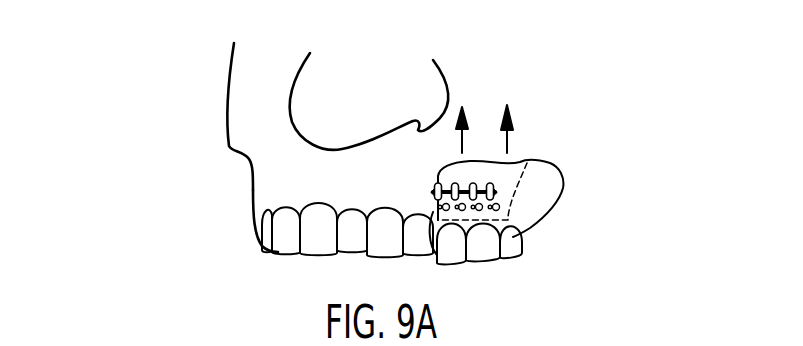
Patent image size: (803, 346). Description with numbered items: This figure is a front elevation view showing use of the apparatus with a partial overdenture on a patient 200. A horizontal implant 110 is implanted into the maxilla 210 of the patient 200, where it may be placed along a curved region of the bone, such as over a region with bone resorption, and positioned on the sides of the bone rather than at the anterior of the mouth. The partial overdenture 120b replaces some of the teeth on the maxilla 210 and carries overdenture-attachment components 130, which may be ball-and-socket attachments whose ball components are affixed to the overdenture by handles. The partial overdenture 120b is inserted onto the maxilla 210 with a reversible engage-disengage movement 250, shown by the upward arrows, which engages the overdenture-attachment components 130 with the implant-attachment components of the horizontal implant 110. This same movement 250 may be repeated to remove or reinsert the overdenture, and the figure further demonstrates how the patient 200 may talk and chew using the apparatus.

The patient 200 is at (227, 98).
The maxilla 210 is at (253, 180).
The reversible engage-disengage movement 250 is at (506, 112).
The partial overdenture 120b is at (539, 160).
The horizontal implant 110 is at (497, 190).
The overdenture-attachment components 130 is at (510, 207).